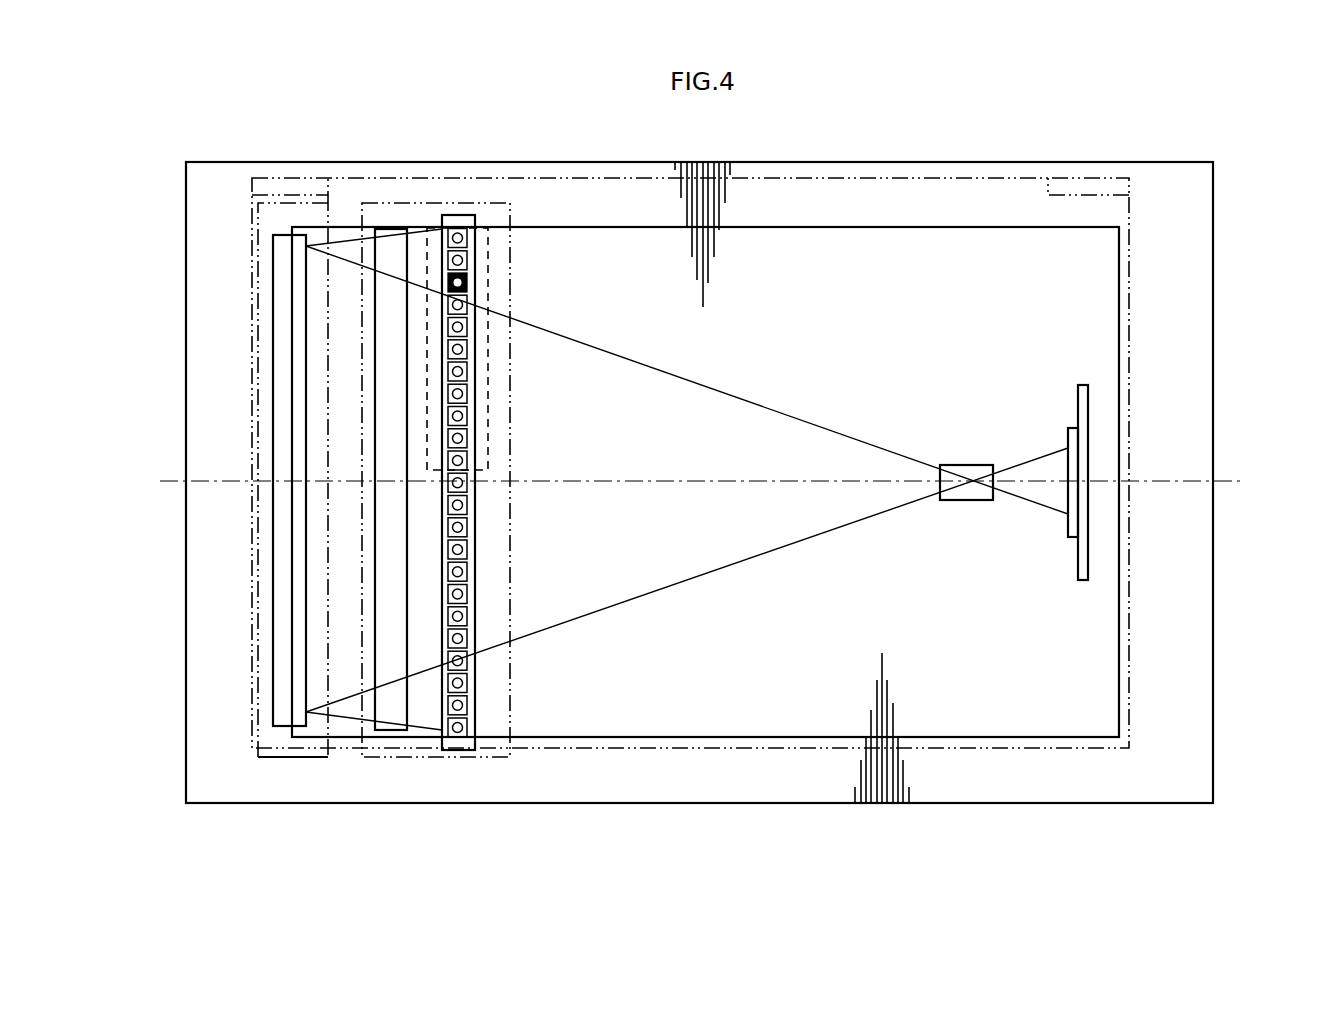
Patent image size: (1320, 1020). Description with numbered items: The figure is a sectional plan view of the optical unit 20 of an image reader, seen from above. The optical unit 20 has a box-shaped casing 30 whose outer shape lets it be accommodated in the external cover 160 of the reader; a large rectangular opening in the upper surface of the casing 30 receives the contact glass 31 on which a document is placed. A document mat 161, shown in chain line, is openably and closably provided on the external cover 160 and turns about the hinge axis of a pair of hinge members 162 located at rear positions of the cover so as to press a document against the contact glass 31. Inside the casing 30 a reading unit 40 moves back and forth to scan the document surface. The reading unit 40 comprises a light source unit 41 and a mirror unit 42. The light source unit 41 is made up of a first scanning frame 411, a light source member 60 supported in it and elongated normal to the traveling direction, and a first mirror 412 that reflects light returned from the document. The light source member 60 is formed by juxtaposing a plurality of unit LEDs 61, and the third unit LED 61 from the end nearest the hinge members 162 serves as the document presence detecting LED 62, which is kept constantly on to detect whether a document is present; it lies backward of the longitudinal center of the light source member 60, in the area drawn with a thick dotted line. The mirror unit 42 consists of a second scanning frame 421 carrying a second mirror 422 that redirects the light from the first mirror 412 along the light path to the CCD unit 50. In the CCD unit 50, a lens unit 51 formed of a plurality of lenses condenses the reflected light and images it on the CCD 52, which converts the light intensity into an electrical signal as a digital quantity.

The optical unit 20 is at (846, 150).
The casing 30 is at (1082, 316).
The contact glass 31 is at (968, 360).
The reading unit 40 is at (408, 866).
The light source unit 41 is at (456, 481).
The first scanning frame 411 is at (488, 202).
The first mirror 412 is at (385, 250).
The mirror unit 42 is at (247, 481).
The second scanning frame 421 is at (326, 202).
The second mirror 422 is at (282, 279).
The CCD unit 50 is at (1048, 604).
The lens unit 51 is at (958, 500).
The CCD 52 is at (1067, 538).
The light source member 60 is at (484, 401).
The unit LED 61 is at (467, 327).
The document presence detecting LED 62 is at (467, 280).
The external cover 160 is at (1213, 328).
The document mat 161 is at (1130, 240).
The hinge members 162 is at (279, 185).